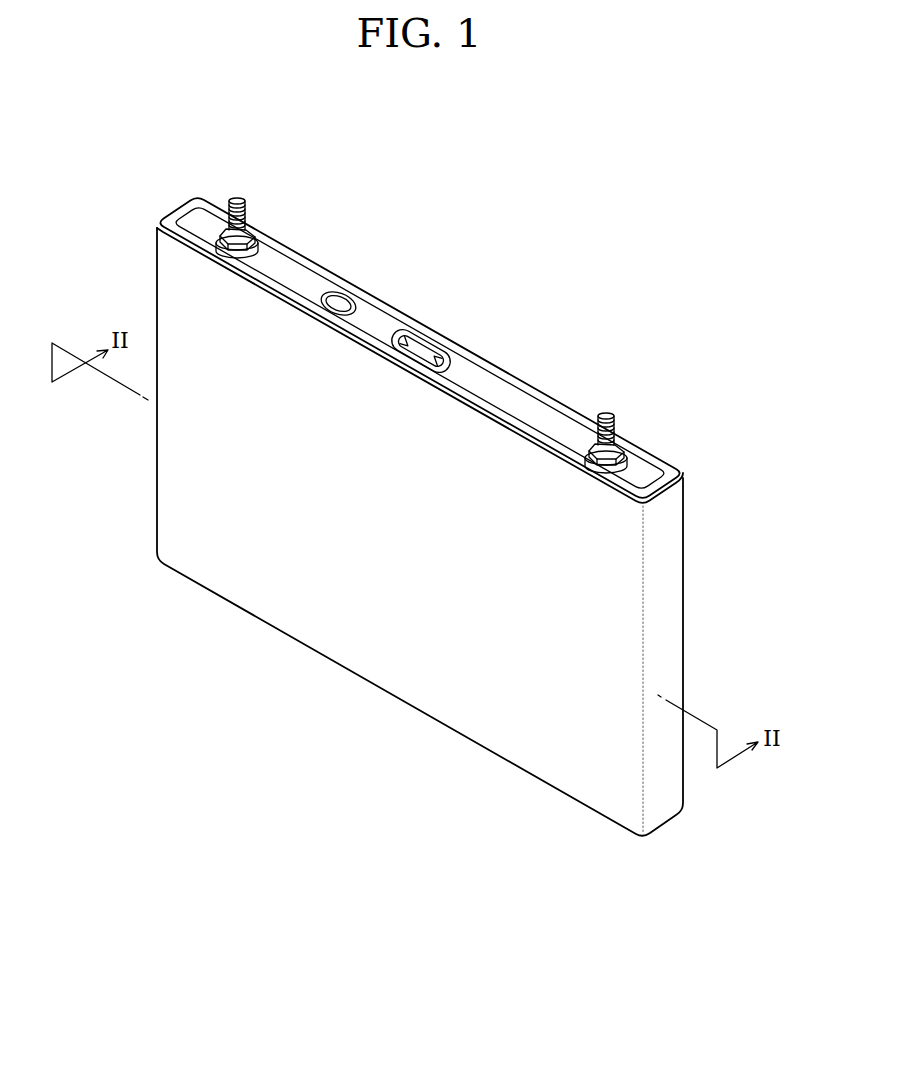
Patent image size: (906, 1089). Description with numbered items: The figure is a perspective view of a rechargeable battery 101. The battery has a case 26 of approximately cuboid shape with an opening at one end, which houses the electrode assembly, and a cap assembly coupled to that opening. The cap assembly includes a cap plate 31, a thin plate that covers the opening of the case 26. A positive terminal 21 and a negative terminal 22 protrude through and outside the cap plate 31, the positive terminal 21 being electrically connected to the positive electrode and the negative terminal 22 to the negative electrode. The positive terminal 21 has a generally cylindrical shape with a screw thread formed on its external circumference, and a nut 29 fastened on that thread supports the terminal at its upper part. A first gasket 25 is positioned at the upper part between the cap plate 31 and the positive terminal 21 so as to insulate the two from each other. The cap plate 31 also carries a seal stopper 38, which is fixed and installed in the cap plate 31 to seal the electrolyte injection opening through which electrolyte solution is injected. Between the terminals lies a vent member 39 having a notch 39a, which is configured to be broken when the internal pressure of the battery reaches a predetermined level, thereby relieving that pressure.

The rechargeable battery 101 is at (421, 493).
The positive terminal 21 is at (240, 200).
The negative terminal 22 is at (606, 413).
The first gasket 25 is at (627, 462).
The case 26 is at (375, 663).
The nut 29 is at (613, 447).
The cap plate 31 is at (388, 306).
The seal stopper 38 is at (340, 300).
The vent member 39 is at (431, 355).
The notch 39a is at (434, 336).